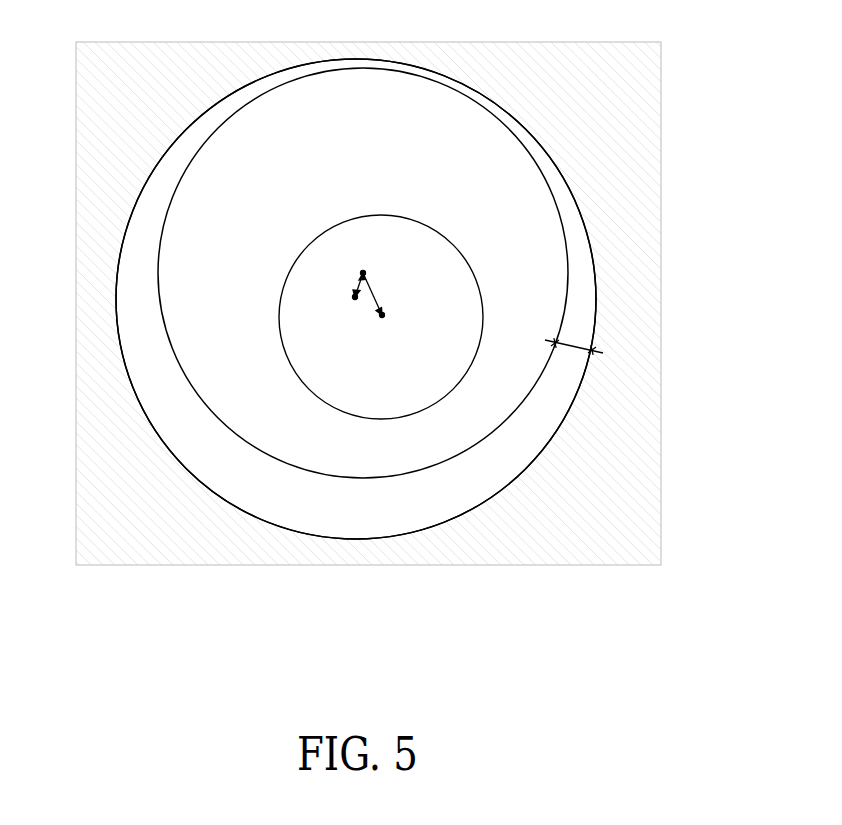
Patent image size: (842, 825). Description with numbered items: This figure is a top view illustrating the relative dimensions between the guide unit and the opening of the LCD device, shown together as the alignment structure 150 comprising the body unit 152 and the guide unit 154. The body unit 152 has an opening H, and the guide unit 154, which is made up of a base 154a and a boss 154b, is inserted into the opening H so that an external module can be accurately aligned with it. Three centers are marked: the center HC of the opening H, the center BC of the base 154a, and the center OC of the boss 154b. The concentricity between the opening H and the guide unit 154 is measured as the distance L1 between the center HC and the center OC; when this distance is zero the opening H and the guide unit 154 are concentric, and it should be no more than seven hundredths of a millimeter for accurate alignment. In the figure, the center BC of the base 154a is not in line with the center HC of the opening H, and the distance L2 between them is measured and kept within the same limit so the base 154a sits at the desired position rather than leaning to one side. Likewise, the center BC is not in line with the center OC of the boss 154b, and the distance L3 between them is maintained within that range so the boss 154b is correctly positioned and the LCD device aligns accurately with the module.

The lens assembly 150 is at (424, 360).
The body unit 152 is at (612, 415).
The guide unit 154 is at (444, 283).
The base 154a is at (458, 158).
The boss 154b is at (445, 197).
The opening H is at (530, 438).
The center of the base BC is at (365, 280).
The center of the opening HC is at (347, 308).
The center of the boss OC is at (390, 328).
The distance between the center of the opening and the center of the boss L1 is at (363, 273).
The distance between the center of the base and the center of the opening L2 is at (375, 300).
The distance between the center of the base and the center of the boss L3 is at (580, 343).